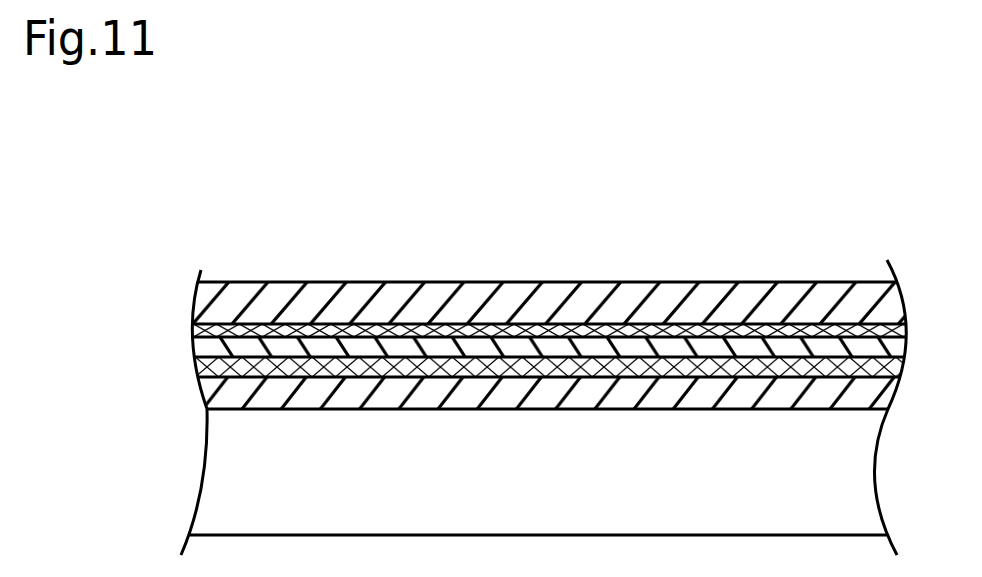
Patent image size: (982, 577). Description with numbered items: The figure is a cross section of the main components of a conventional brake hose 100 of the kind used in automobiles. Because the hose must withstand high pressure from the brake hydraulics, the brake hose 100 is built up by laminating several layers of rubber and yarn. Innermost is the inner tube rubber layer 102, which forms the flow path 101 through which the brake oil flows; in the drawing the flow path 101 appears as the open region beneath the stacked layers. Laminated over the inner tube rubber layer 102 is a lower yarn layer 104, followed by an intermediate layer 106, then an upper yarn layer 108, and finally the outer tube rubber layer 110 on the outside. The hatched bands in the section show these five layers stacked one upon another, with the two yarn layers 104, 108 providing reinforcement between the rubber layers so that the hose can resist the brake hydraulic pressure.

The brake hose 100 is at (679, 190).
The flow path 101 is at (215, 473).
The inner tube rubber layer 102 is at (213, 393).
The lower yarn layer 104 is at (213, 362).
The intermediate layer 106 is at (204, 350).
The upper yarn layer 108 is at (200, 332).
The outer tube rubber layer 110 is at (207, 308).